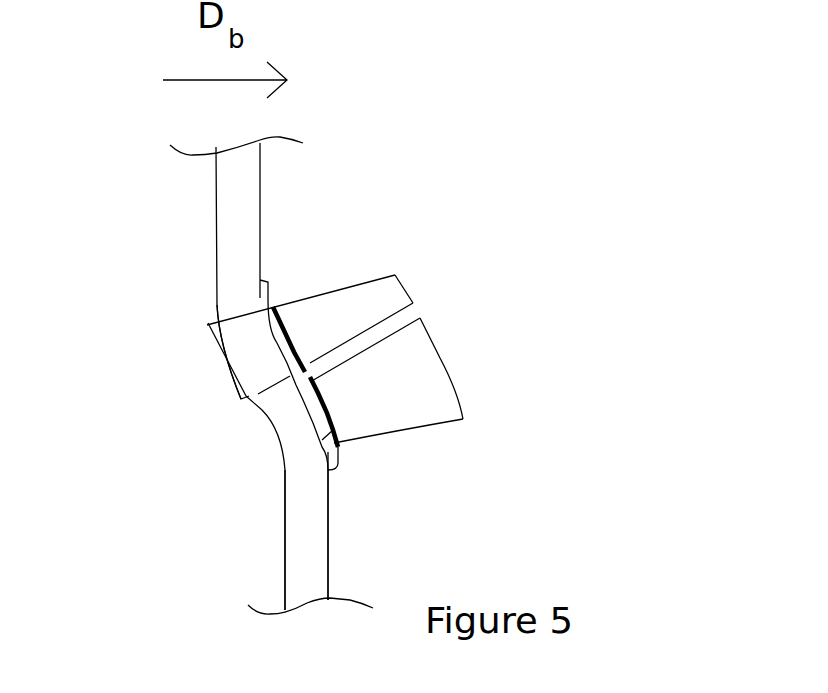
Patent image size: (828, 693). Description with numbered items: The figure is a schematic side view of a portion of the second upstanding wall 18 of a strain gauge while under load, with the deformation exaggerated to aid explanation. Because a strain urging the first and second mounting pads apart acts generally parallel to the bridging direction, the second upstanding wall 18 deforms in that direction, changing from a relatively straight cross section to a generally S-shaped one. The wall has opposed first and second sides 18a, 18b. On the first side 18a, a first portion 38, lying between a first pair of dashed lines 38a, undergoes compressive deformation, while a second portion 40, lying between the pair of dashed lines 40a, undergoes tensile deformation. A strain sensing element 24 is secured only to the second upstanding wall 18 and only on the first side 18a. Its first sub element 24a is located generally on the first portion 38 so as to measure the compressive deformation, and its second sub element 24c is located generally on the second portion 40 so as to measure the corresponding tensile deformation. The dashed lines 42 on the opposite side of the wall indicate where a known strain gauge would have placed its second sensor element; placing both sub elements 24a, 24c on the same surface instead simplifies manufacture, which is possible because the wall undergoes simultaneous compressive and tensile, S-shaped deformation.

The second upstanding wall 18 is at (307, 533).
The first side 18a is at (330, 547).
The second side 18b is at (282, 492).
The strain sensing element 24 is at (268, 288).
The first sub element 24a is at (293, 330).
The second sub element 24c is at (333, 395).
The first portion 38 is at (280, 358).
The first pair of dashed lines 38a is at (403, 286).
The second portion 40 is at (307, 415).
The pair of dashed lines 40a is at (450, 365).
The dashed lines 42 is at (218, 362).